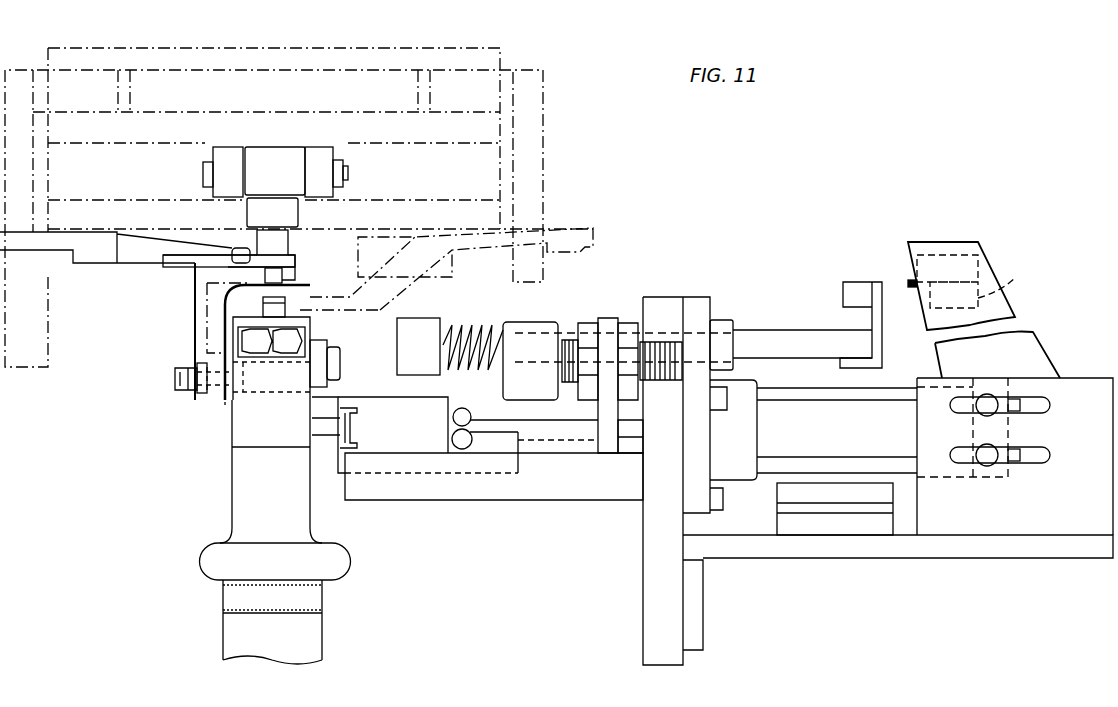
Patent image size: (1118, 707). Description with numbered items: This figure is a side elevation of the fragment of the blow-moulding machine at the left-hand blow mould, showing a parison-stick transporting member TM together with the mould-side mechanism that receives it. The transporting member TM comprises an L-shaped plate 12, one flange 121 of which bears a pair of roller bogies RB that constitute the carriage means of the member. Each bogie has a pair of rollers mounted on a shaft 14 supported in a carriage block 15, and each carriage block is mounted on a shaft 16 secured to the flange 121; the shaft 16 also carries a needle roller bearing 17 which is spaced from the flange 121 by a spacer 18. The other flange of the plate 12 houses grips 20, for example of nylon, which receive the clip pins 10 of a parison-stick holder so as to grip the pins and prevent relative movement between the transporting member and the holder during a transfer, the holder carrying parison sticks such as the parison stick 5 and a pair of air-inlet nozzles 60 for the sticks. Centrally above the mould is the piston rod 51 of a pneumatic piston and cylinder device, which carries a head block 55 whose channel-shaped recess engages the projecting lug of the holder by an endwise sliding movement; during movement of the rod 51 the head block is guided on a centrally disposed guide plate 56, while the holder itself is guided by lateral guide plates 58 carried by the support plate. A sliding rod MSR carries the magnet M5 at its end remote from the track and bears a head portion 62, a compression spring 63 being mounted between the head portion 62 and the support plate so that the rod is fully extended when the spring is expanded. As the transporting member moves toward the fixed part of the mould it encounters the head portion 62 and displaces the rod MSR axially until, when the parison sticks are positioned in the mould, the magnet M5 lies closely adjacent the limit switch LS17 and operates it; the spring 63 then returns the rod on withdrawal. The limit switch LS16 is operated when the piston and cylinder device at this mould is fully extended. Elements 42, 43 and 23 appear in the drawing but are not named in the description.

The roller bogie RB is at (297, 158).
The carriage block 15 is at (275, 171).
The shaft 14 is at (345, 172).
The needle roller bearing 17 is at (272, 212).
The stop pin 42 is at (234, 252).
The spacer 18 is at (258, 240).
The flange 121 is at (296, 263).
The shaft 16 is at (283, 288).
The parison-stick transporting member TM is at (197, 305).
The clamp block 43 is at (285, 307).
The grip 20 is at (207, 362).
The air-inlet nozzle 60 is at (341, 353).
The bearing housing 23 is at (268, 385).
The L-shaped plate 12 is at (203, 412).
The clip pin 10 is at (228, 400).
The parison stick 5 is at (205, 563).
The head block 55 is at (327, 432).
The guide plate 56 is at (353, 424).
The lateral guide plate 58 is at (460, 470).
The piston rod 51 is at (495, 420).
The head portion 62 is at (425, 318).
The compression spring 63 is at (475, 322).
The sliding rod MSR is at (787, 335).
The magnet M5 is at (850, 290).
The limit switch LS17 is at (996, 284).
The limit switch LS16 is at (818, 497).